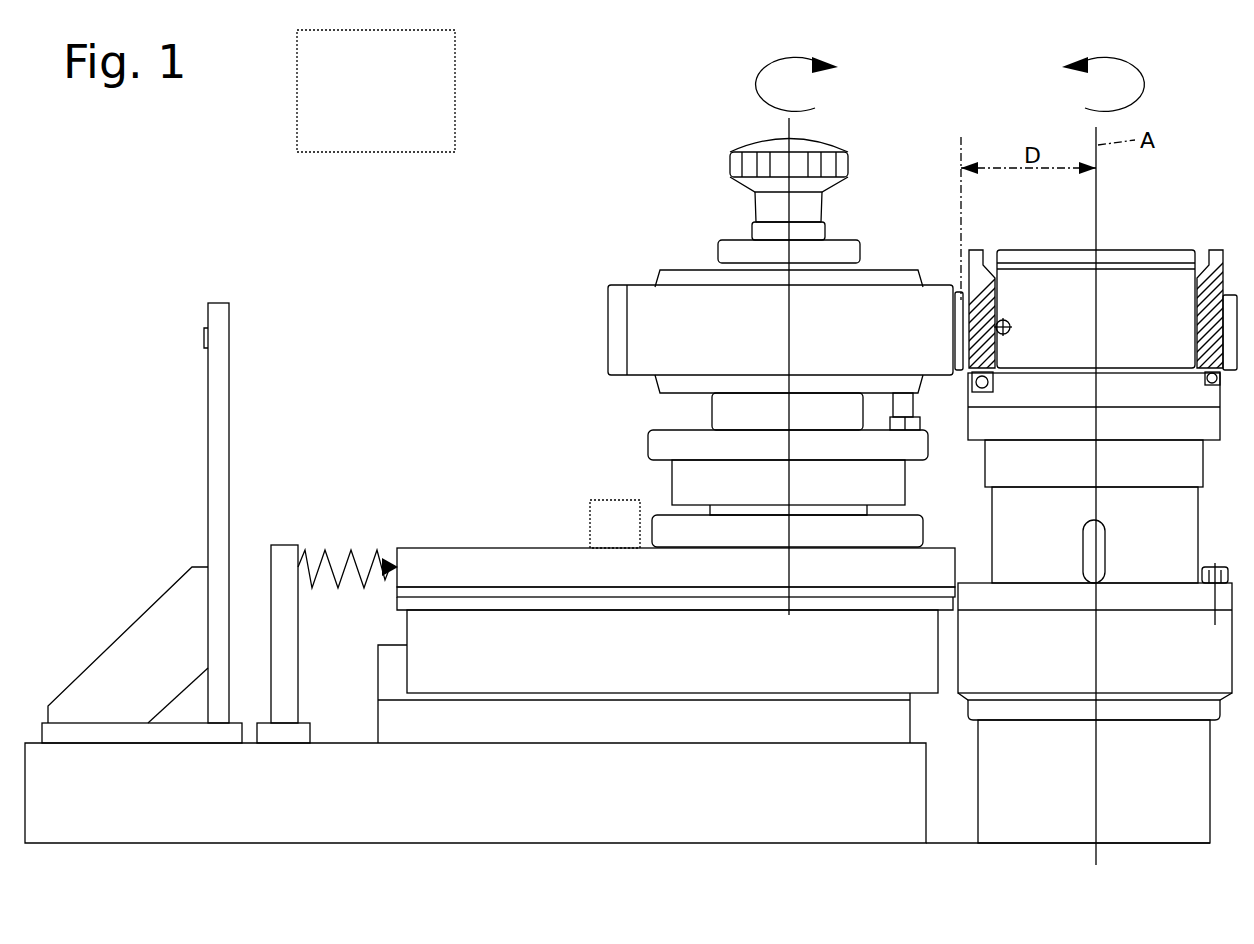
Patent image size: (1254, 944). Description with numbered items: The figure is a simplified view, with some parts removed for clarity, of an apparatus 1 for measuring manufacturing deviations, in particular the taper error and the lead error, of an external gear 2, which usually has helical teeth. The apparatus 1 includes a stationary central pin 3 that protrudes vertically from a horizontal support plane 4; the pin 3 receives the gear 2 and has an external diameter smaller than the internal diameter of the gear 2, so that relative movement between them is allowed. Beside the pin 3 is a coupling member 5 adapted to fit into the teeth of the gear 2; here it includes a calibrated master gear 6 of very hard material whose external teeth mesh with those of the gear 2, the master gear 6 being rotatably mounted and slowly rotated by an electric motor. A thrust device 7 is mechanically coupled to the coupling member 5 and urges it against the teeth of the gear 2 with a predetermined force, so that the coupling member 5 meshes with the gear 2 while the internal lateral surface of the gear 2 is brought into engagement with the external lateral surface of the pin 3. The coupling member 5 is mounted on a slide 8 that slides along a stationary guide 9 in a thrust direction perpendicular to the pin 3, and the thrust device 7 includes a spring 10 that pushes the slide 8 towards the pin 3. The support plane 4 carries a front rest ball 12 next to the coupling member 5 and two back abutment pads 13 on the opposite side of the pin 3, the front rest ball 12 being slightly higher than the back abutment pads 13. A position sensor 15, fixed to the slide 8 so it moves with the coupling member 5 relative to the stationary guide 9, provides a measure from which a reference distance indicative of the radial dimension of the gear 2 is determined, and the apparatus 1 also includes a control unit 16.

The apparatus 1 is at (150, 168).
The external gear 2 is at (1219, 222).
The stationary central pin 3 is at (1140, 287).
The horizontal support plane 4 is at (1193, 387).
The coupling member 5 is at (651, 185).
The master gear 6 is at (680, 303).
The thrust device 7 is at (346, 470).
The slide 8 is at (490, 565).
The stationary guide 9 is at (541, 653).
The spring 10 is at (341, 582).
The front rest ball 12 is at (975, 379).
The back abutment pads 13 is at (1218, 386).
The position sensor 15 is at (615, 524).
The control unit 16 is at (376, 91).